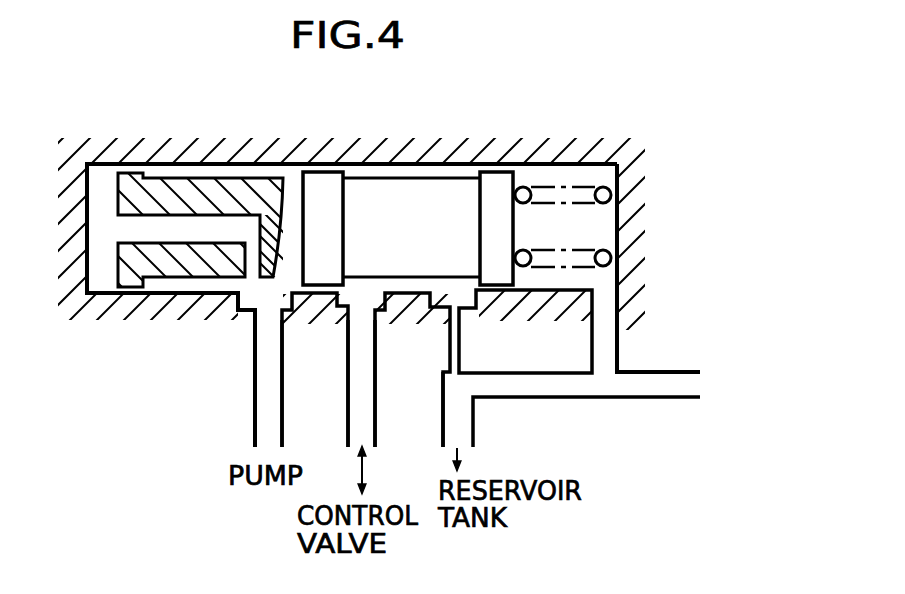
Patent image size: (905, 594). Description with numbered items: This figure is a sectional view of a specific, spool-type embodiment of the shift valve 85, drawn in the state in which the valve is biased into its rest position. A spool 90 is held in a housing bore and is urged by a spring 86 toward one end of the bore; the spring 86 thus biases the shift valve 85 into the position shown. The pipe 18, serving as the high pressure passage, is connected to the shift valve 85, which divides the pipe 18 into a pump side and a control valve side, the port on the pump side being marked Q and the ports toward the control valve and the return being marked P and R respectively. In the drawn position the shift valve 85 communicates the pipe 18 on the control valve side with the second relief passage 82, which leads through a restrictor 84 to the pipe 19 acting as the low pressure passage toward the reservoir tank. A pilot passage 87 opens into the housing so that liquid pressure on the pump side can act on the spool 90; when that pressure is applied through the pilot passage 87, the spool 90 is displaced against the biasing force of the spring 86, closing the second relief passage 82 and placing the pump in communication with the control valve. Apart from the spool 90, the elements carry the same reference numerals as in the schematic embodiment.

The shift valve 85 is at (451, 242).
The spool 90 is at (402, 190).
The spring 86 is at (586, 186).
The pilot passage 87 is at (619, 327).
The restrictor 84 is at (525, 331).
The second relief passage 82 is at (462, 349).
The pipe 18 is at (255, 425).
The pipe 19 is at (557, 398).
The port Q is at (246, 307).
The pressure port P is at (340, 305).
The return port R is at (436, 305).